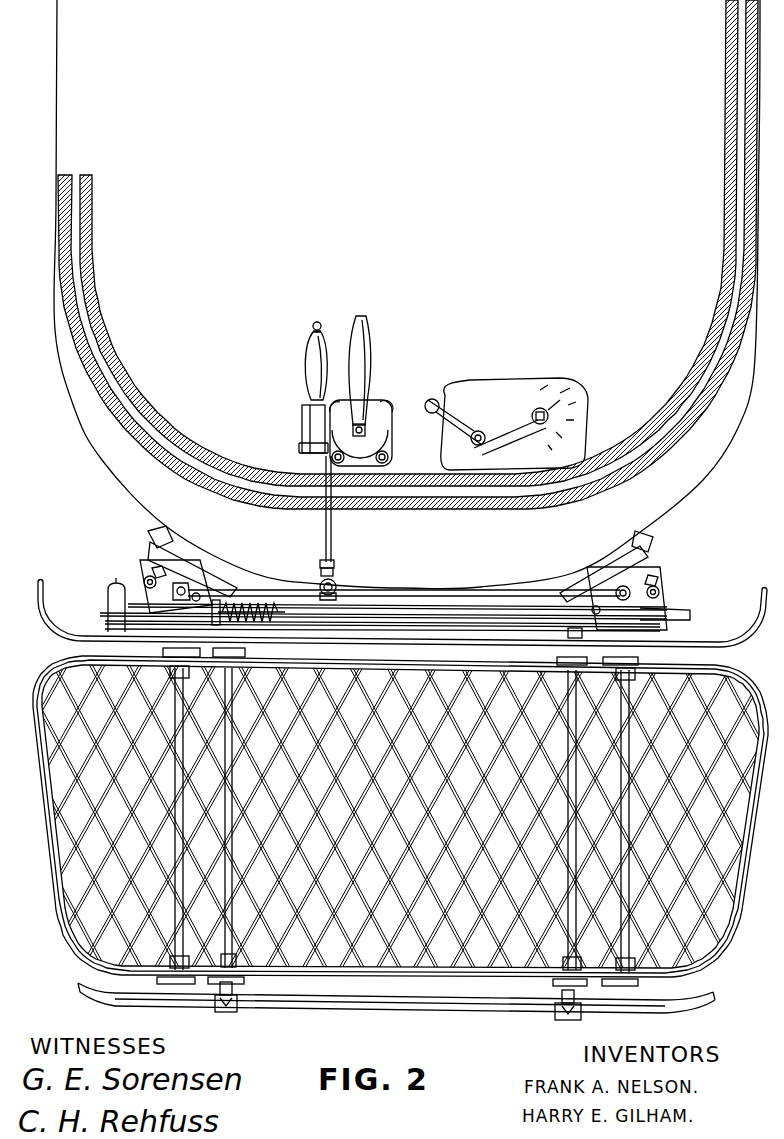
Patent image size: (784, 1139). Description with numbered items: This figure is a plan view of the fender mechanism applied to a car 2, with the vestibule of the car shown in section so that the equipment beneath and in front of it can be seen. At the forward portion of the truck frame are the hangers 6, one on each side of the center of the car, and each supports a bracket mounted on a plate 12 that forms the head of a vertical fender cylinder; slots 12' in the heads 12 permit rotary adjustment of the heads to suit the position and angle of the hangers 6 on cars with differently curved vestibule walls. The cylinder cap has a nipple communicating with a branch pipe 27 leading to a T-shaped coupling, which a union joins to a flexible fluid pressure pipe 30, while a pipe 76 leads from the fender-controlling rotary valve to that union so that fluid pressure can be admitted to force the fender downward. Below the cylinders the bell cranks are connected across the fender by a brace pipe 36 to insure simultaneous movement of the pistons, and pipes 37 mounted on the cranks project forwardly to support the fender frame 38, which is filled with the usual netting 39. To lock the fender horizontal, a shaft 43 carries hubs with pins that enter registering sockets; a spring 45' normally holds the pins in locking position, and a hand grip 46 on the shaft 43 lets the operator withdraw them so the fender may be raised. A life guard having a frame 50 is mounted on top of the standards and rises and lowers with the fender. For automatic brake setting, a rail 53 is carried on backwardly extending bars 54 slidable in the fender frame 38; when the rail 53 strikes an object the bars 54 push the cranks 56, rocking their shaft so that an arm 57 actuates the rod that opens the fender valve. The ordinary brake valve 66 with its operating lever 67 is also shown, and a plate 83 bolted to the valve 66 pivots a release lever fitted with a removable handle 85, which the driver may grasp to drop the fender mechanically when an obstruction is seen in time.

The car 2 is at (693, 416).
The hangers 6 is at (150, 537).
The plate (cylinder head) 12 is at (409, 586).
The slots 12' is at (407, 574).
The branch pipe 27 is at (420, 593).
The flexible fluid pressure pipe 30 is at (340, 586).
The brace pipe 36 is at (370, 680).
The pipes (fender supports) 37 is at (184, 830).
The fender frame 38 is at (72, 950).
The netting 39 is at (128, 863).
The shaft 43 is at (446, 620).
The spring 45' is at (253, 575).
The hand grip 46 is at (108, 605).
The life guard frame 50 is at (743, 648).
The rail 53 is at (283, 1012).
The bars 54 is at (233, 843).
The cranks 56 is at (256, 602).
The arm 57 is at (243, 664).
The valve 66 is at (392, 438).
The operating lever 67 is at (371, 337).
The pipe 76 is at (333, 531).
The plate 83 is at (300, 428).
The handle 85 is at (305, 343).